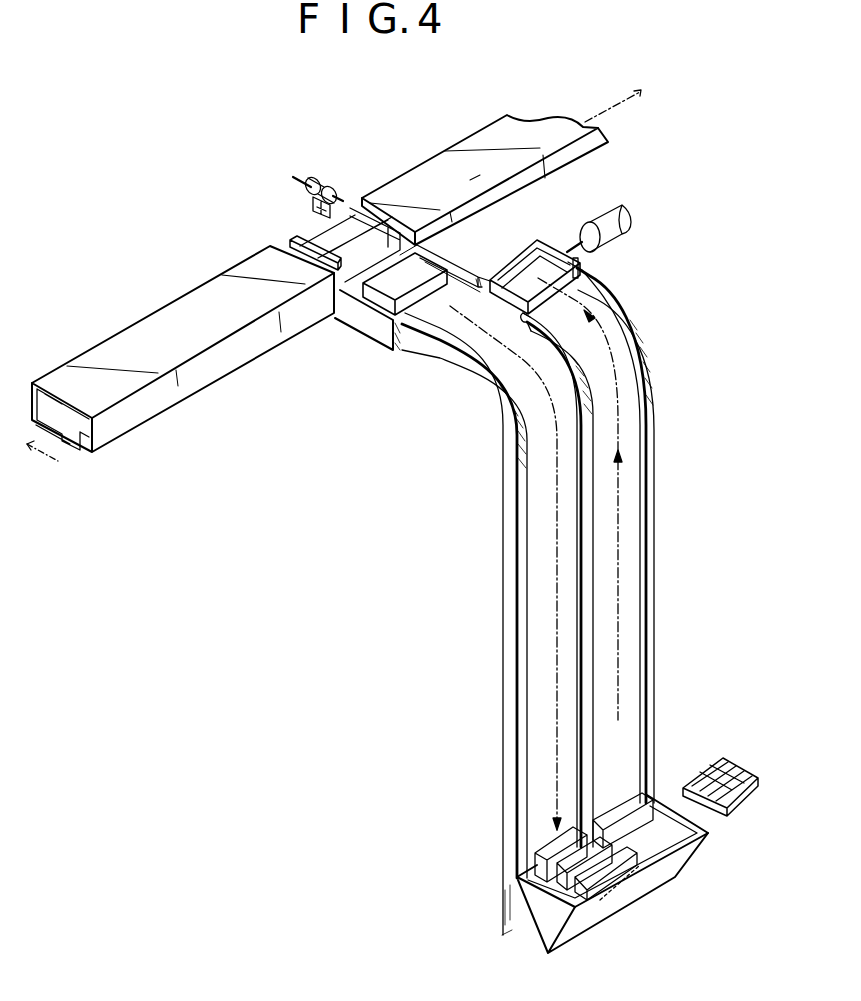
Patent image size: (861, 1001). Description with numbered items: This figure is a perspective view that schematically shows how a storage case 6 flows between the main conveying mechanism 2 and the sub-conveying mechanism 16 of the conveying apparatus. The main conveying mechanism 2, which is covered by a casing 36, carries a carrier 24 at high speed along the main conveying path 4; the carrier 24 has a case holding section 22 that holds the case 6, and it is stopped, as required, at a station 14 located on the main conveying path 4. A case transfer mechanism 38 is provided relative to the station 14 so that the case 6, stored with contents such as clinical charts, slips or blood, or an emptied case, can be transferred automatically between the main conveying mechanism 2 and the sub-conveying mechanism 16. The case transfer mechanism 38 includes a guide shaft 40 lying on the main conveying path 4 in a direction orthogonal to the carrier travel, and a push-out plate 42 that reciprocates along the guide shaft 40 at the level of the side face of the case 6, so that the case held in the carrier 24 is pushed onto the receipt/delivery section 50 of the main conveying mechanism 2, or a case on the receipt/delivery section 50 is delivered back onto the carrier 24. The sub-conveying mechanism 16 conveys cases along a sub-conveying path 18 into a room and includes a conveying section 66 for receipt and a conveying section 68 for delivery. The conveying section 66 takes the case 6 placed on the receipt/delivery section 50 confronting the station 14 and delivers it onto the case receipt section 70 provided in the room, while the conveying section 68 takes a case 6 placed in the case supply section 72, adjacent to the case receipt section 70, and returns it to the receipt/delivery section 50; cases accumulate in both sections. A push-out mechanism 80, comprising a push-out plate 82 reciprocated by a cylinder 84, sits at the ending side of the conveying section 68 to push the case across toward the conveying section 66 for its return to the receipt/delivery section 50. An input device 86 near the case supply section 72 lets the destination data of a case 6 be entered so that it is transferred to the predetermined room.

The main conveying mechanism 2 is at (225, 255).
The main conveying path 4 is at (52, 455).
The storage case 6 is at (398, 338).
The station 14 is at (310, 232).
The sub-conveying mechanism 16 is at (497, 562).
The sub-conveying path 18 is at (557, 623).
The case holding section 22 is at (312, 250).
The carrier 24 is at (380, 205).
The casing 36 is at (165, 405).
The case transfer mechanism 38 is at (325, 178).
The guide shaft 40 is at (300, 175).
The push-out plate 42 is at (313, 205).
The receipt/delivery section 50 is at (365, 297).
The conveying section for receipt 66 is at (535, 517).
The conveying section for delivery 68 is at (628, 492).
The case receipt section 70 is at (588, 893).
The case supply section 72 is at (653, 847).
The push-out mechanism 80 is at (683, 234).
The push-out plate 82 is at (560, 255).
The cylinder 84 is at (612, 218).
The input device 86 is at (727, 765).